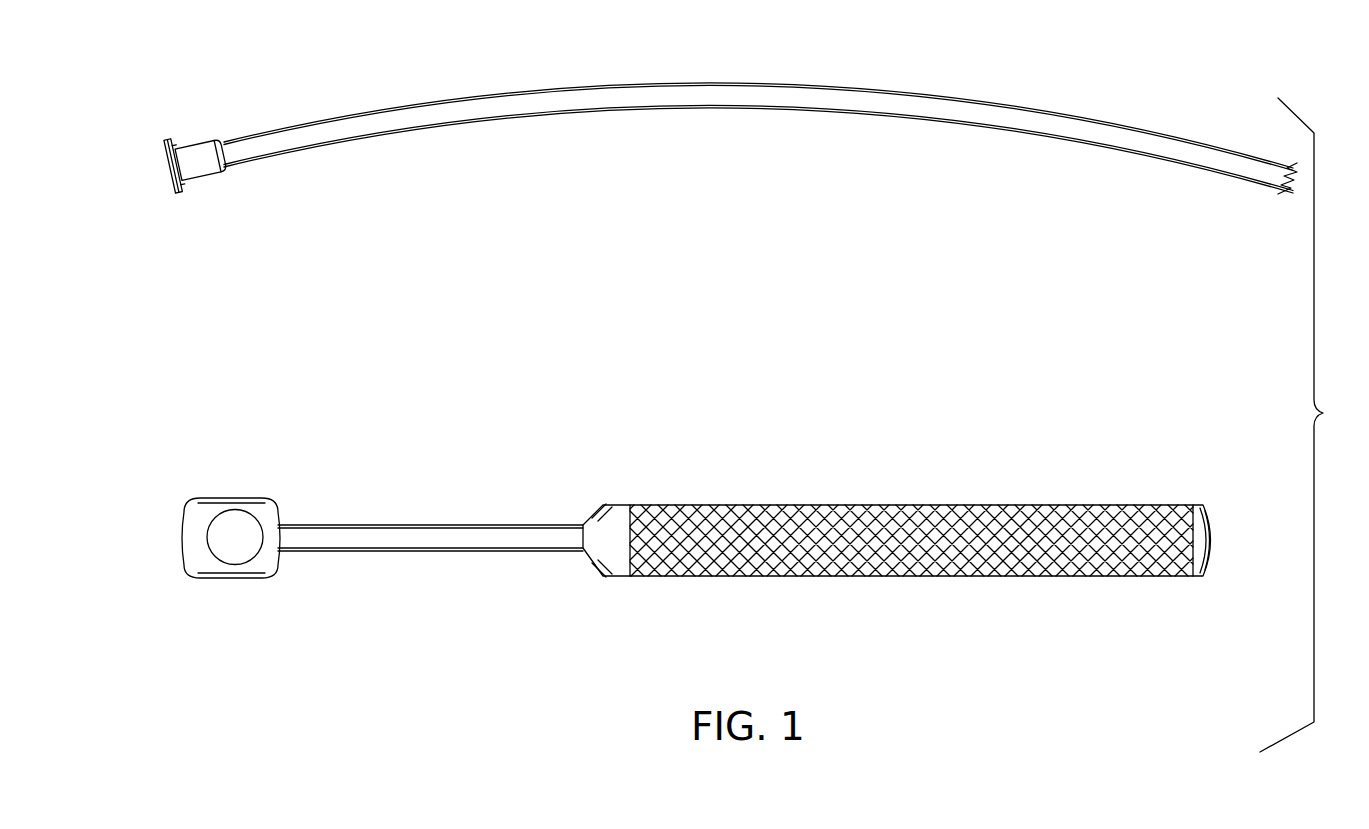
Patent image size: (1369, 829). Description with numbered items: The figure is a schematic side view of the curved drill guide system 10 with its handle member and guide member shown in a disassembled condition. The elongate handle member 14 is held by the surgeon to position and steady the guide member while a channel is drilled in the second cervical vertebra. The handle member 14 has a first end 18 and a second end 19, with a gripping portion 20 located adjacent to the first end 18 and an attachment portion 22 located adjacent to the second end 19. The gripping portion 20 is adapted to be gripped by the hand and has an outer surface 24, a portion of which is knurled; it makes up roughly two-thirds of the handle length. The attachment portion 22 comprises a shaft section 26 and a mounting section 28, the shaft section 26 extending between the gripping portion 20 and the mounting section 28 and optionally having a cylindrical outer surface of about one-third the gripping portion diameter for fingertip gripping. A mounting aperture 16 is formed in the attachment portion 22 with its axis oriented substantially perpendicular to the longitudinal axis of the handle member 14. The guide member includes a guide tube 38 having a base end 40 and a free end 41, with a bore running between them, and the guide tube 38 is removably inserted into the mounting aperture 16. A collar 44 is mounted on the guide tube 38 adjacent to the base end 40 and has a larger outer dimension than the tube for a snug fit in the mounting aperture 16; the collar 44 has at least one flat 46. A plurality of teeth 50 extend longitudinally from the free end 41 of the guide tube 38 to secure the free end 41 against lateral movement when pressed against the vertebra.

The curved drill guide system 10 is at (1312, 425).
The elongate handle member 14 is at (528, 540).
The mounting aperture 16 is at (240, 542).
The first end 18 is at (1215, 553).
The second end 19 is at (190, 540).
The gripping portion 20 is at (962, 552).
The attachment portion 22 is at (408, 552).
The outer surface 24 is at (795, 572).
The shaft section 26 is at (468, 552).
The mounting section 28 is at (205, 568).
The guide tube 38 is at (380, 117).
The base end 40 is at (220, 148).
The free end 41 is at (1192, 147).
The collar 44 is at (183, 147).
The flat 46 is at (203, 163).
The teeth 50 is at (1273, 174).